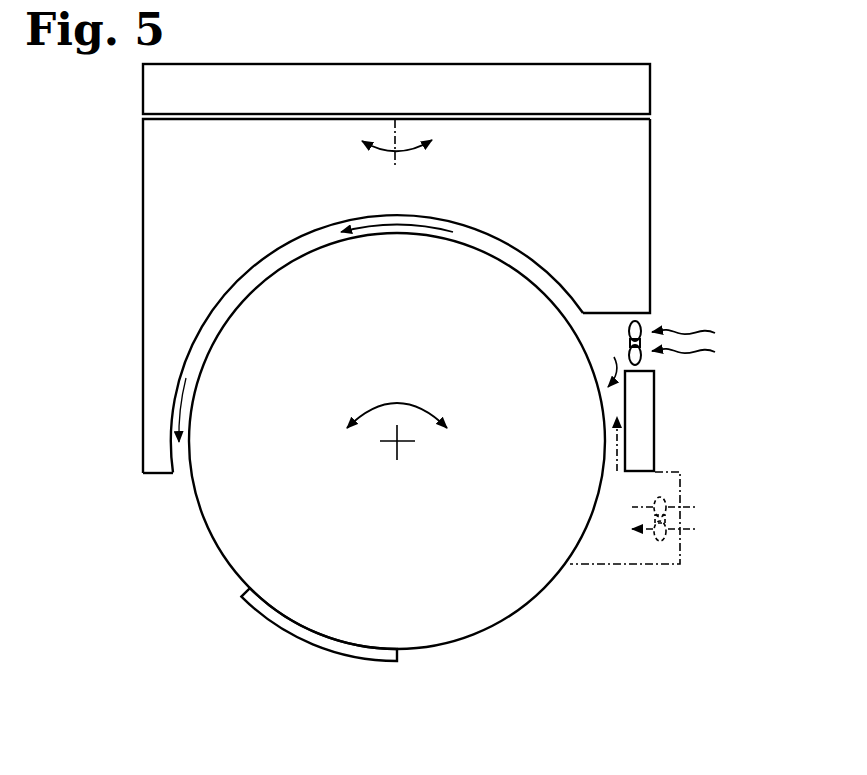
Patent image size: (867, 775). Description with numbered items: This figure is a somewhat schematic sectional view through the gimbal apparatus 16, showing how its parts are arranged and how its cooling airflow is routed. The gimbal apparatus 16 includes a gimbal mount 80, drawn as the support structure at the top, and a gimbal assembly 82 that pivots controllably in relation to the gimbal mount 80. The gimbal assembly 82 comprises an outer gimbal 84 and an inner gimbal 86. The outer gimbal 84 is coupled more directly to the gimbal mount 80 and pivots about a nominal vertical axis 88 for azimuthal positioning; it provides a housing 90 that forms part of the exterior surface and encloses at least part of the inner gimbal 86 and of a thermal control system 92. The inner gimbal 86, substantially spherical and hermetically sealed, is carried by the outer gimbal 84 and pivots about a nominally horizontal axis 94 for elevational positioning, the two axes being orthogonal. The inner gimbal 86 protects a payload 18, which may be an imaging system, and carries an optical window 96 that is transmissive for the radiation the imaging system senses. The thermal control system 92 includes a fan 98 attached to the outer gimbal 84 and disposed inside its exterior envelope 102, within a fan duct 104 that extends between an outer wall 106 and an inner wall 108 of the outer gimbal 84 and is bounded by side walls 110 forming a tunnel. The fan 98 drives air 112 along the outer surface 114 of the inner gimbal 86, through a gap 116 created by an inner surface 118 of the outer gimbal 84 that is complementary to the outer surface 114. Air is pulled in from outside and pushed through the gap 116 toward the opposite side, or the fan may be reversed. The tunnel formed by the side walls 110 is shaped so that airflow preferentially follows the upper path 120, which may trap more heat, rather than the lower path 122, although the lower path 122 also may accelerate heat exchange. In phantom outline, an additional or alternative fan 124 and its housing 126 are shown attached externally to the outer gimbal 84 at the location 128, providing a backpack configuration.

The gimbal apparatus 16 is at (97, 222).
The payload 18 is at (457, 592).
The gimbal mount 80 is at (143, 96).
The gimbal assembly 82 is at (110, 461).
The outer gimbal 84 is at (143, 272).
The inner gimbal 86 is at (215, 553).
The vertical axis 88 is at (395, 168).
The housing 90 is at (143, 355).
The thermal control system 92 is at (676, 366).
The horizontal axis 94 is at (404, 449).
The optical window 96 is at (292, 608).
The fan 98 is at (647, 366).
The exterior envelope 102 is at (656, 263).
The fan duct 104 is at (662, 318).
The outer wall 106 is at (655, 283).
The inner wall 108 is at (508, 244).
The side walls 110 is at (612, 317).
The air 112 is at (376, 217).
The outer surface 114 is at (315, 250).
The gap 116 is at (260, 279).
The inner surface 118 is at (304, 241).
The upper path 120 is at (572, 307).
The lower path 122 is at (604, 362).
The fan 124 is at (665, 537).
The housing 126 is at (614, 565).
The external attachment 128 is at (673, 452).